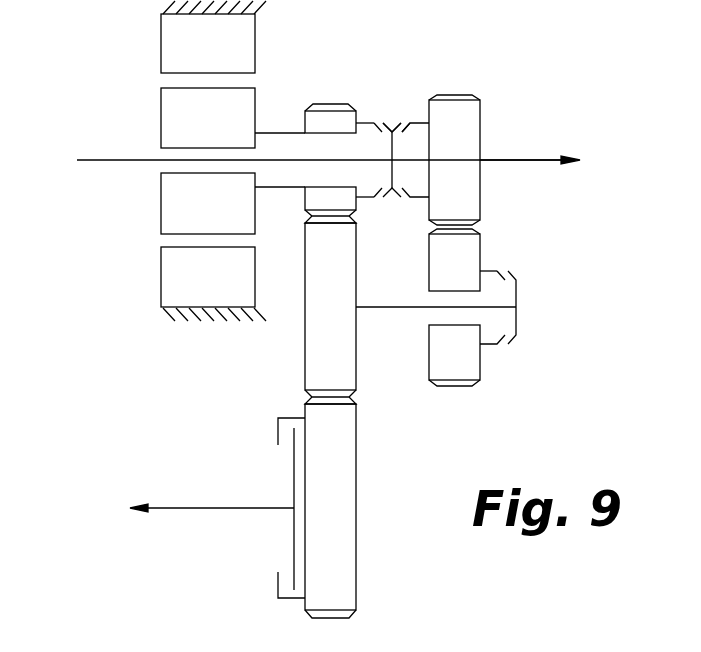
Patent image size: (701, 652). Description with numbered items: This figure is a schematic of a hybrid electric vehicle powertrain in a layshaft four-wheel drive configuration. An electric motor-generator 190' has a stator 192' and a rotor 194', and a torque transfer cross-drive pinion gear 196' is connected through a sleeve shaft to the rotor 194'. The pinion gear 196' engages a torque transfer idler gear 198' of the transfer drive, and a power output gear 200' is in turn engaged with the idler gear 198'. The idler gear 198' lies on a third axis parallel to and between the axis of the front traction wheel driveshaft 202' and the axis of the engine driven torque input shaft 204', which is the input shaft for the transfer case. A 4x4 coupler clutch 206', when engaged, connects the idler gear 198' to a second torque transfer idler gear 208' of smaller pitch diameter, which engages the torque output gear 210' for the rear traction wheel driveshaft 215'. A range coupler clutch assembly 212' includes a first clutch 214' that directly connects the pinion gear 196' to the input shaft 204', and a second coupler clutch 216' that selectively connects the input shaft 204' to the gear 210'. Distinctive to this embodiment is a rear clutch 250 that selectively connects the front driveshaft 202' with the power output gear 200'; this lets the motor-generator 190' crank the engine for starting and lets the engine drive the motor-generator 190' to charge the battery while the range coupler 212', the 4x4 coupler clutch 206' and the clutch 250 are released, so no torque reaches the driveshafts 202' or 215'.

The electric motor-generator 190' is at (216, 161).
The stator 192' is at (167, 43).
The rotor 194' is at (167, 118).
The torque transfer cross-drive pinion gear 196' is at (314, 92).
The torque transfer idler gear 198' is at (369, 295).
The power output gear 200' is at (374, 511).
The front traction wheel driveshaft 202' is at (212, 477).
The engine driven torque input shaft 204' is at (328, 192).
The 4x4 coupler clutch 206' is at (504, 339).
The second torque transfer idler gear 208' is at (493, 260).
The torque output gear 210' is at (493, 159).
The range coupler clutch assembly 212' is at (470, 135).
The first clutch 214' is at (391, 108).
The rear traction wheel driveshaft 215' is at (543, 186).
The second coupler clutch 216' is at (401, 222).
The rear clutch 250 is at (285, 531).